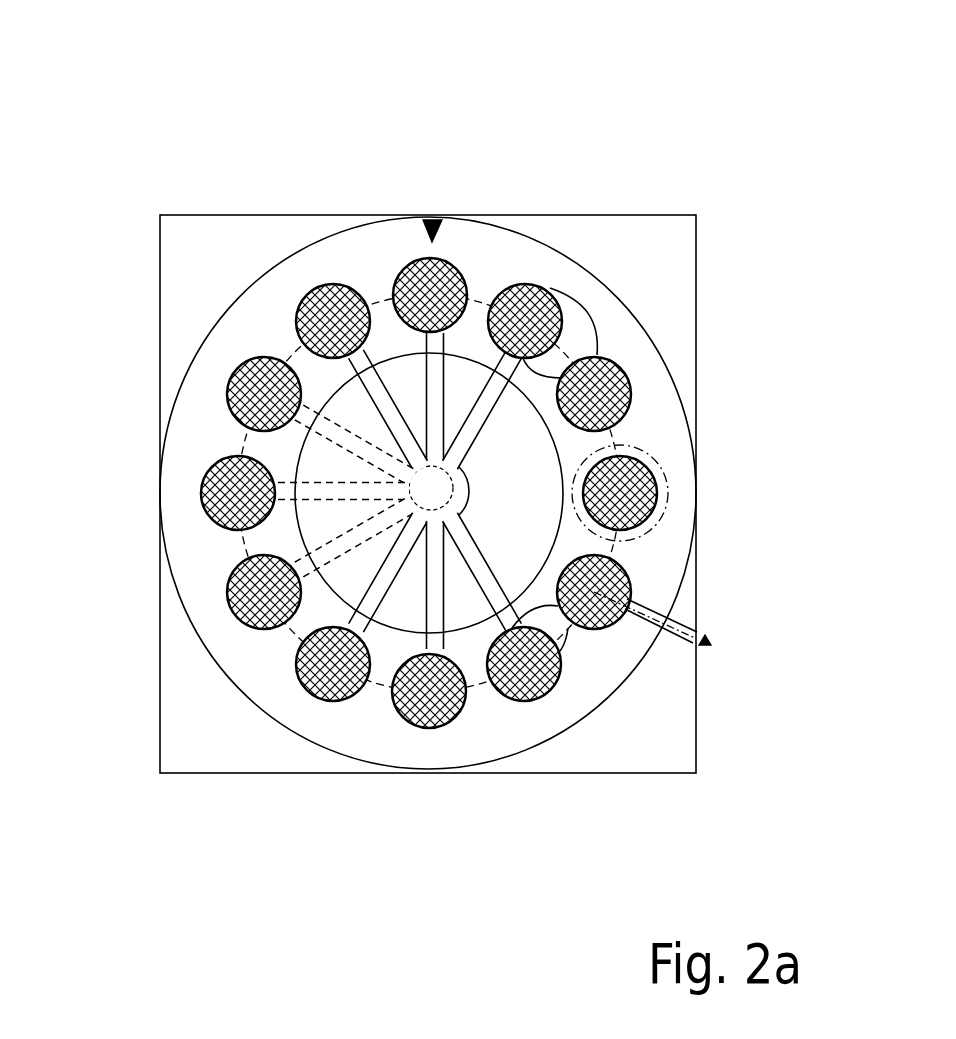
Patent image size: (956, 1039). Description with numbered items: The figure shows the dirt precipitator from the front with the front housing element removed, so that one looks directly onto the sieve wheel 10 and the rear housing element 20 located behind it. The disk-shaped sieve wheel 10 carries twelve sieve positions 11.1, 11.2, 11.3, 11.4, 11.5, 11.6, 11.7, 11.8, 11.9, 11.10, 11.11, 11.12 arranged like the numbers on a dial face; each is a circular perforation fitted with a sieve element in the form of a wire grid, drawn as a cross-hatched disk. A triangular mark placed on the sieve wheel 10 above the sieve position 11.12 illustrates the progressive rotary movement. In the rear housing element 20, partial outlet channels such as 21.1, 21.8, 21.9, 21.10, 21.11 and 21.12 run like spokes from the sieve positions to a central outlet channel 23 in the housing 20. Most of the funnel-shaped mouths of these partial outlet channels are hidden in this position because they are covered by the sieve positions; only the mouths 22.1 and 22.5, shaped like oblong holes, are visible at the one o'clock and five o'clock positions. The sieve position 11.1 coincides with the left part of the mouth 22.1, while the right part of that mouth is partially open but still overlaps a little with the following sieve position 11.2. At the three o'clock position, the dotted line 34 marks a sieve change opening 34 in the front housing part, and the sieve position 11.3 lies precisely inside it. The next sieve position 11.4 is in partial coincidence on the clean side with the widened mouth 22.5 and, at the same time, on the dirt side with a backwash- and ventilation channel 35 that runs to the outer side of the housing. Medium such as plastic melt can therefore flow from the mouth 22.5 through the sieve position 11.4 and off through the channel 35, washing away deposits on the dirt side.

The sieve wheel 10 is at (628, 322).
The rear housing element 20 is at (180, 233).
The central outlet channel 23 is at (438, 493).
The sieve change opening 34 is at (640, 538).
The backwash- and ventilation channel 35 is at (678, 637).
The sieve position 11.1 is at (538, 285).
The sieve position 11.2 is at (632, 378).
The sieve position 11.3 is at (652, 503).
The sieve position 11.4 is at (630, 578).
The sieve position 11.5 is at (523, 702).
The sieve position 11.6 is at (437, 728).
The sieve position 11.7 is at (320, 702).
The sieve position 11.8 is at (250, 624).
The sieve position 11.9 is at (210, 510).
The sieve position 11.10 is at (229, 388).
The sieve position 11.11 is at (328, 285).
The sieve position 11.12 is at (446, 265).
The partial outlet channel 21.1 is at (485, 397).
The partial outlet channel 21.8 is at (328, 551).
The partial outlet channel 21.9 is at (337, 491).
The partial outlet channel 21.10 is at (328, 430).
The partial outlet channel 21.11 is at (373, 391).
The partial outlet channel 21.12 is at (430, 385).
The mouth 22.1 is at (577, 328).
The mouth 22.5 is at (570, 658).